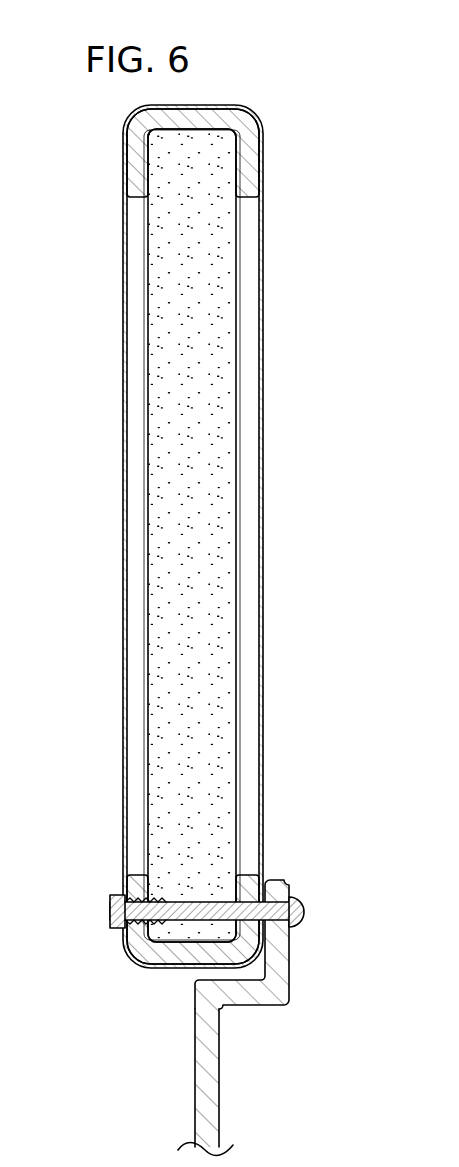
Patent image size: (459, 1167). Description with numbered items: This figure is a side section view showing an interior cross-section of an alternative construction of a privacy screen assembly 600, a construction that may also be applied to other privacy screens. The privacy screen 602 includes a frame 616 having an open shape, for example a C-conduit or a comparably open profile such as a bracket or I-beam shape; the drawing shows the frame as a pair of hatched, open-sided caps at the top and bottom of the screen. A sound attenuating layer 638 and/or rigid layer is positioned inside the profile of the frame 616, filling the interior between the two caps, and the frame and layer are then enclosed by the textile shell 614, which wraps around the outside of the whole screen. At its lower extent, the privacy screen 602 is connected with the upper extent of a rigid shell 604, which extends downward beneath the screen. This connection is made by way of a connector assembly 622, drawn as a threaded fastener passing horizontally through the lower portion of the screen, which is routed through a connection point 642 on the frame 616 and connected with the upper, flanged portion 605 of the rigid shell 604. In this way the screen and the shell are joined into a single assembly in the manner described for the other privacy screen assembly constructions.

The privacy screen assembly 600 is at (266, 95).
The privacy screen 602 is at (276, 414).
The rigid shell 604 is at (237, 1077).
The flanged portion 605 is at (280, 955).
The textile shell 614 is at (123, 464).
The frame 616 is at (248, 142).
The connector assembly 622 is at (110, 897).
The core material 638 is at (175, 207).
The connection point 642 is at (250, 878).